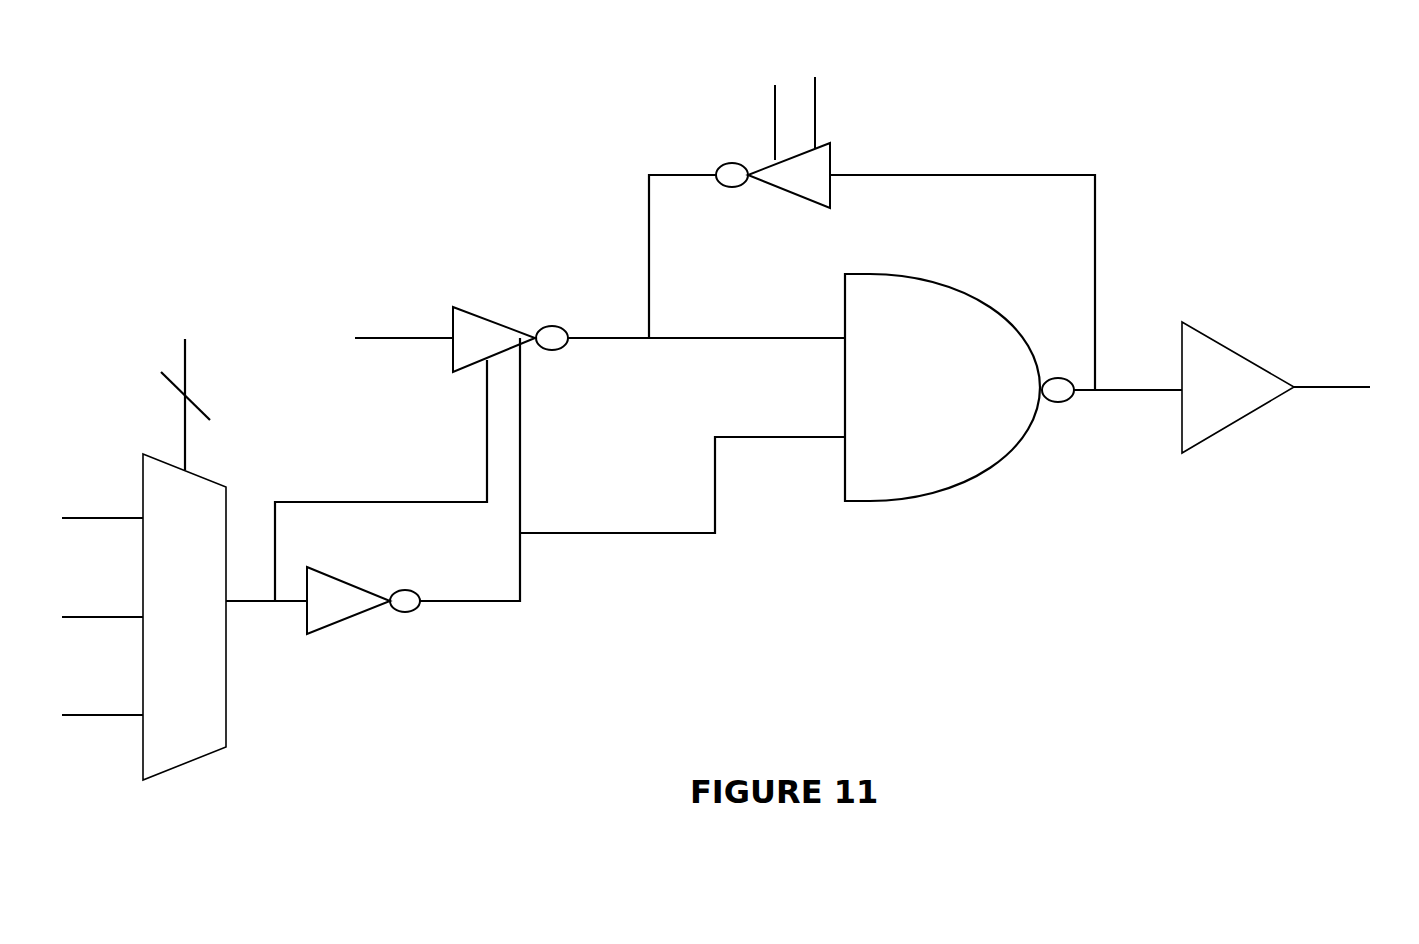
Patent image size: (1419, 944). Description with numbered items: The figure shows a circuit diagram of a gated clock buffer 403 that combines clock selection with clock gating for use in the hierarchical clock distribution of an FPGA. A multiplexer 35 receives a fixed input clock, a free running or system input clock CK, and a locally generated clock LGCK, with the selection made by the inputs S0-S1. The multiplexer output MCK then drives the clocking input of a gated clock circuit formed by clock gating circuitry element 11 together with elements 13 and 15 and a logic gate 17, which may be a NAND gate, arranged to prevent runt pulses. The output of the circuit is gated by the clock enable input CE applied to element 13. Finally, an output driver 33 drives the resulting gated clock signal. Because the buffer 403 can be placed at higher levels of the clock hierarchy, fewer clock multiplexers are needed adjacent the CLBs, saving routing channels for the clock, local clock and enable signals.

The clock gating circuitry element 11 is at (362, 613).
The element 13 is at (503, 352).
The element 15 is at (813, 162).
The logic gate 17 is at (928, 403).
The output driver 33 is at (1263, 368).
The multiplexer 35 is at (210, 715).
The gated clock buffer 403 is at (728, 419).